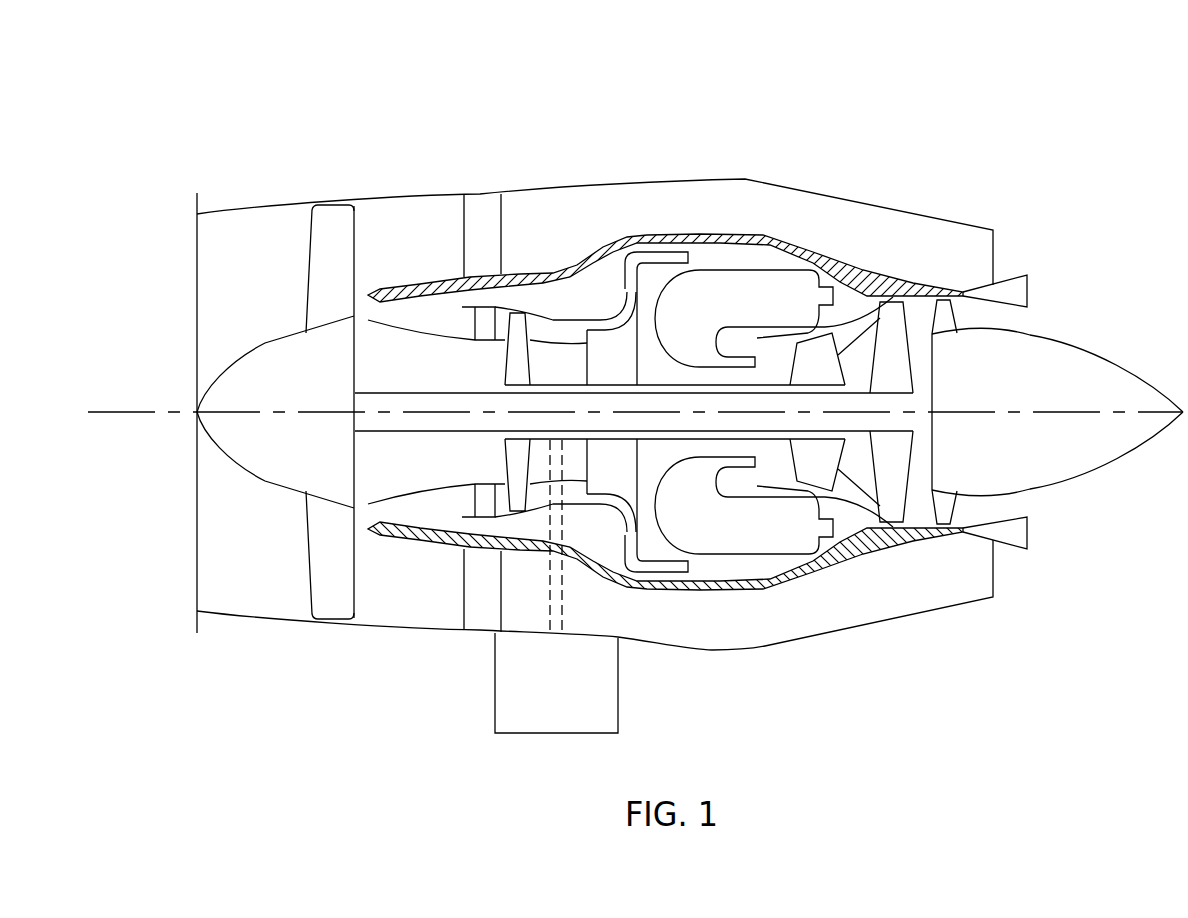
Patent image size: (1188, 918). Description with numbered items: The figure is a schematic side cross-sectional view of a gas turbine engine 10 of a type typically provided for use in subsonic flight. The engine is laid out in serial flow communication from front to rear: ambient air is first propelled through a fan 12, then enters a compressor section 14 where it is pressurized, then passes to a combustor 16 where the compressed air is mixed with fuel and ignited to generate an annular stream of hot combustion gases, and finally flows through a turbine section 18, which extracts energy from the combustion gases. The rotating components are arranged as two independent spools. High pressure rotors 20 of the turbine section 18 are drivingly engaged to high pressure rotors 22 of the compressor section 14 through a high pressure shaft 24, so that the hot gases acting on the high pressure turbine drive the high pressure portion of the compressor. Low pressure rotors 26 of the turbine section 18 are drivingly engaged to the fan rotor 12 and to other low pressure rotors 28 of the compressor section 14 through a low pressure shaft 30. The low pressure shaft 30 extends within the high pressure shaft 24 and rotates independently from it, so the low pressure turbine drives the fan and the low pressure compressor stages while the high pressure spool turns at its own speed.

The gas turbine engine 10 is at (1018, 133).
The fan 12 is at (330, 547).
The compressor section 14 is at (548, 323).
The combustor 16 is at (725, 297).
The turbine section 18 is at (858, 460).
The high pressure rotor 20 is at (818, 353).
The high pressure rotor 22 is at (610, 353).
The high pressure shaft 24 is at (733, 397).
The low pressure rotor 26 is at (890, 337).
The low pressure rotor 28 is at (476, 307).
The low pressure shaft 30 is at (385, 432).